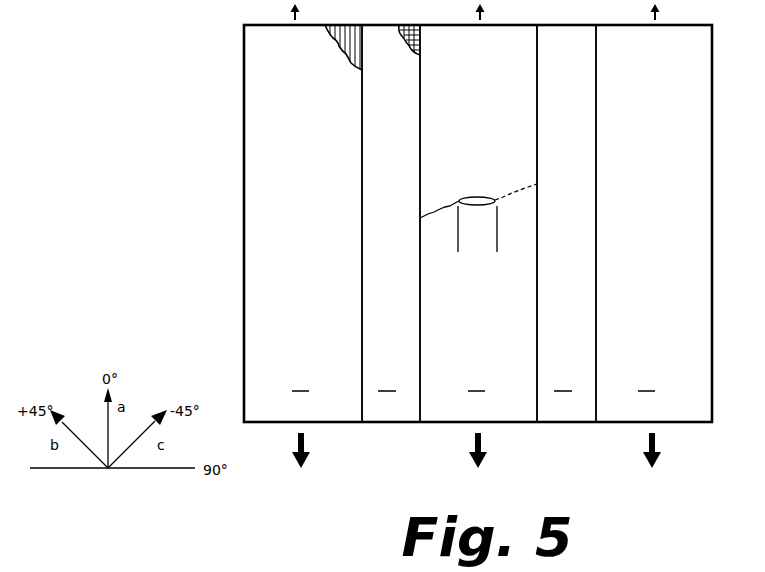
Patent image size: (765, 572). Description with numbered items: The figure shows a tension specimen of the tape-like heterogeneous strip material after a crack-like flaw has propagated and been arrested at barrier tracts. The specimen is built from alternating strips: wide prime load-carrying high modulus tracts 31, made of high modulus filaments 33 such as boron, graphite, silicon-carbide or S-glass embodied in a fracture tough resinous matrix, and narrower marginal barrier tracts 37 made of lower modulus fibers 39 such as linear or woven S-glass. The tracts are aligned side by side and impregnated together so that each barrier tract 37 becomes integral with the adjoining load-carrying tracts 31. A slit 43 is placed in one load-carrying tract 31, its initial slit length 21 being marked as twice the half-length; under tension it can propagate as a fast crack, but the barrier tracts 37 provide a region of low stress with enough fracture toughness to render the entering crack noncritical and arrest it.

The prime load-carrying high modulus tract 31 is at (478, 223).
The marginal barrier tract 37 is at (479, 223).
The high modulus filaments 33 is at (333, 40).
The lower modulus fibers 39 is at (418, 38).
The slit 43 is at (478, 197).
The hole diameter dimension 2l 21 is at (477, 229).